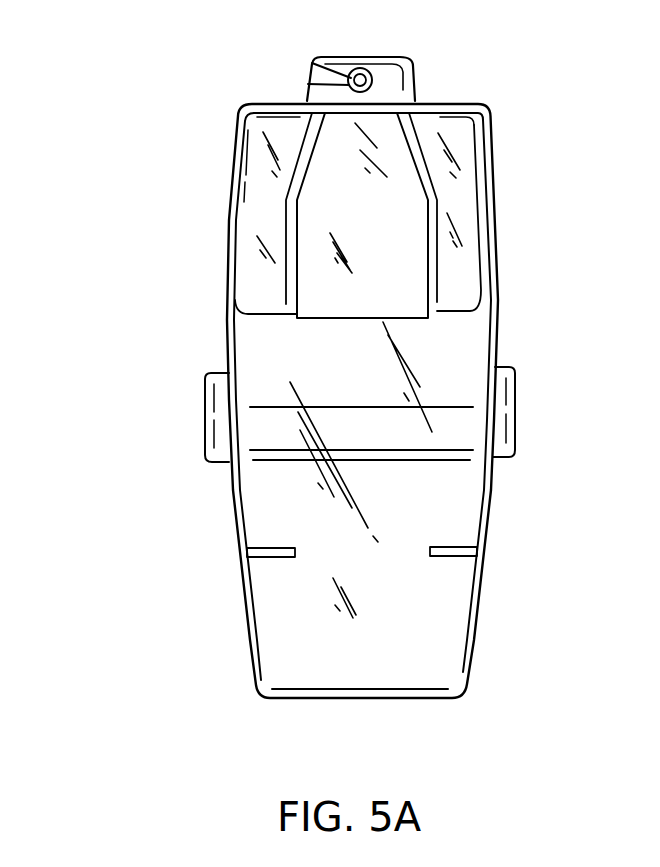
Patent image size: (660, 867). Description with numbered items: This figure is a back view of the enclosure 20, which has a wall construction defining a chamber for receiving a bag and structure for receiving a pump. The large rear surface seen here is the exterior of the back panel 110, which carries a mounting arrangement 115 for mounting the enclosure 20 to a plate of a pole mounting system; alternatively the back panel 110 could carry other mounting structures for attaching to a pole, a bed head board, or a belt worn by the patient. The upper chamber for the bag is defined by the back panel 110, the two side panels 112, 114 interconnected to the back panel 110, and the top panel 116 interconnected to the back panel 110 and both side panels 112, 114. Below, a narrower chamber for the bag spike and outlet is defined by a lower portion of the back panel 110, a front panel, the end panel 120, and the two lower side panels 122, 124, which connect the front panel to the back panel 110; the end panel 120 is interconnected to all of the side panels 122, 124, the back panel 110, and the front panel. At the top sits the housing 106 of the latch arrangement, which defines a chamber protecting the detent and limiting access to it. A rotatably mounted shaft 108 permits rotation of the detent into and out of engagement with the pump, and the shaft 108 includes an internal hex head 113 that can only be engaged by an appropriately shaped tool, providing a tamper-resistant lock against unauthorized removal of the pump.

The enclosure 20 is at (552, 248).
The housing 106 is at (416, 58).
The shaft 108 is at (315, 62).
The internal hex head 113 is at (308, 81).
The top panel 116 is at (447, 99).
The side panel 112 is at (494, 150).
The side panel 114 is at (227, 238).
The mounting arrangement 115 is at (413, 176).
The back panel 110 is at (362, 385).
The side panel 124 is at (246, 607).
The side panel 122 is at (481, 590).
The end panel 120 is at (425, 698).